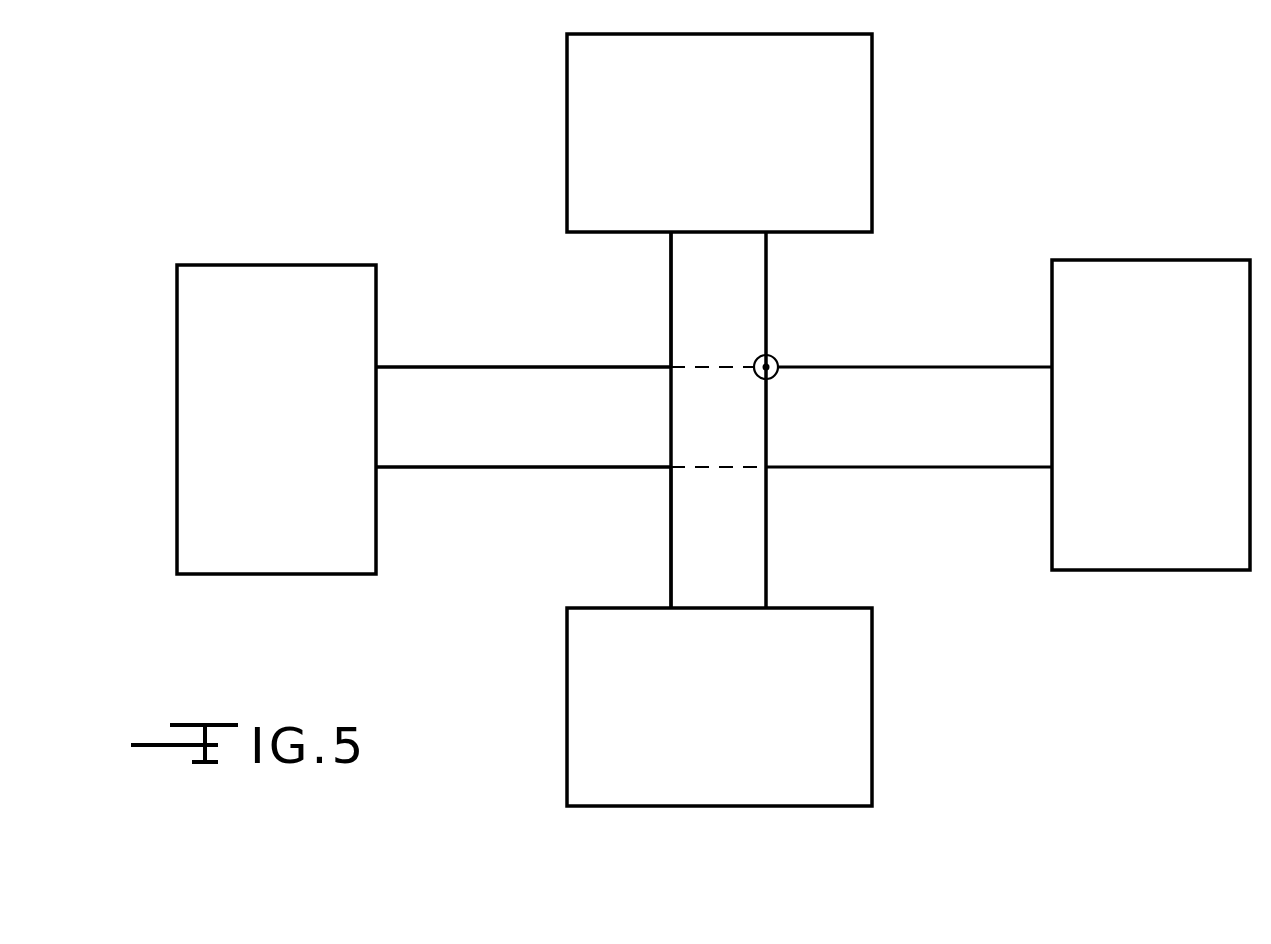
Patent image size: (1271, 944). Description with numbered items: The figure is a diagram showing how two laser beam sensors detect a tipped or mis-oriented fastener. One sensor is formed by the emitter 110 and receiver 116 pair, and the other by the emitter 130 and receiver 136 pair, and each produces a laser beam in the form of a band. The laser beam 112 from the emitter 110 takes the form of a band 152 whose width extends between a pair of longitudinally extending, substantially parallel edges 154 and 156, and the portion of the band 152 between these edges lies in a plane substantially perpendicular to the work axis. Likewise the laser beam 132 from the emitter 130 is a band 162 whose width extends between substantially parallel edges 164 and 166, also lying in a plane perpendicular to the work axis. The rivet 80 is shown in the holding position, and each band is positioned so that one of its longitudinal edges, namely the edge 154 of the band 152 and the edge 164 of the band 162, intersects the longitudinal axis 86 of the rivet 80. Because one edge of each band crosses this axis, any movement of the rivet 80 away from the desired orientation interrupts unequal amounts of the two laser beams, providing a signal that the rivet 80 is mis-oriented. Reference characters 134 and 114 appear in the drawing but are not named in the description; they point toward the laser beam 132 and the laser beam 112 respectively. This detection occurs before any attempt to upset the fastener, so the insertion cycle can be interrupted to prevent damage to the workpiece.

The emitter 130 is at (865, 122).
The receiver 136 is at (842, 763).
The emitter 110 is at (325, 545).
The receiver 116 is at (1165, 553).
The band 162 is at (693, 262).
The edge 166 is at (668, 563).
The vertical passage wall 134 is at (648, 311).
The edge 164 is at (768, 562).
The laser beam 132 is at (746, 263).
The edge 154 is at (585, 366).
The edge 156 is at (604, 470).
The band 152 is at (430, 458).
The laser beam 112 is at (490, 444).
The horizontal passage flow 114 is at (542, 505).
The rivet 80 is at (770, 364).
The longitudinal axis 86 is at (776, 361).